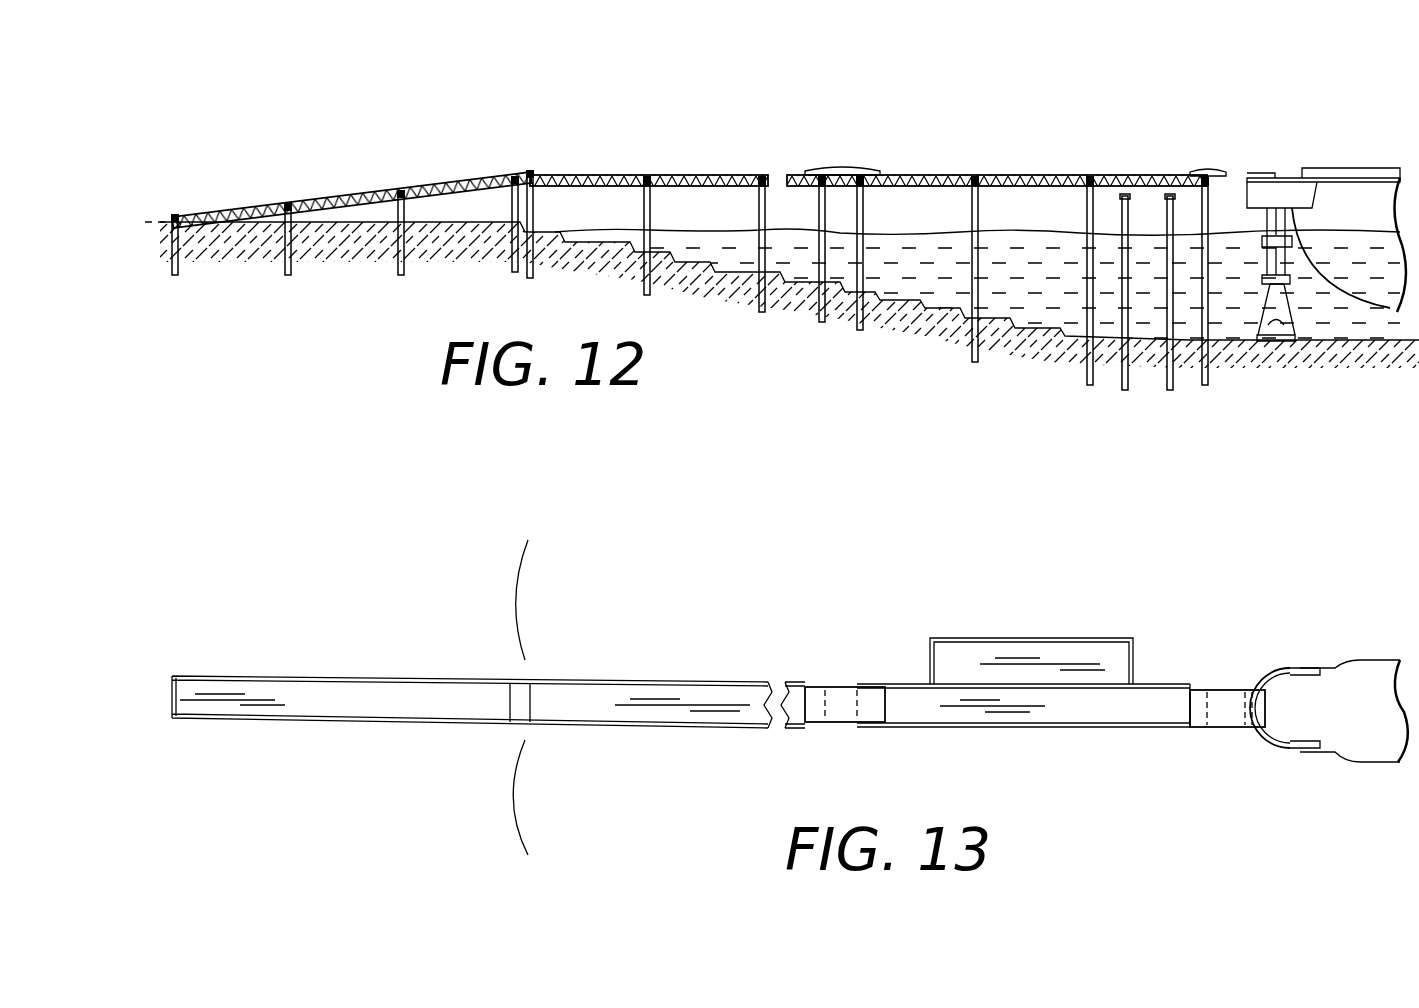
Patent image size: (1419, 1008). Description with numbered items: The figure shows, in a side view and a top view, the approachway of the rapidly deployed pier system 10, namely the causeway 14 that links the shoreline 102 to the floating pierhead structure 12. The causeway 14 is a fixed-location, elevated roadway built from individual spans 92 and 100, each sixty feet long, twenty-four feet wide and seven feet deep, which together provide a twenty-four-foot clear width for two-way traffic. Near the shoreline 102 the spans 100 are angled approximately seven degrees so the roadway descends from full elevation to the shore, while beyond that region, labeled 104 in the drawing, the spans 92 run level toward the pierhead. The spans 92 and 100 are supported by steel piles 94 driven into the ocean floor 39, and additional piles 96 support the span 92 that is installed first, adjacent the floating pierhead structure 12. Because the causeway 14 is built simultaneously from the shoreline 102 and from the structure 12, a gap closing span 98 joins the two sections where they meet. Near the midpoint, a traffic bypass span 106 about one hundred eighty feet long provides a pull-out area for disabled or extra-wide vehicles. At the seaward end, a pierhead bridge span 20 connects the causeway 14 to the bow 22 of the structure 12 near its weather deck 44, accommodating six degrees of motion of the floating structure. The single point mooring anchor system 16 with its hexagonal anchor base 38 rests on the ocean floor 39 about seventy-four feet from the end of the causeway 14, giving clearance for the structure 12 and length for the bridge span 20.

In FIG. 12, the rapidly deployed pier system 10 is at (366, 78).
In FIG. 13, the rapidly deployed pier system 10 is at (476, 508).
In FIG. 12, the floating pierhead structure 12 is at (1338, 142).
In FIG. 13, the floating pierhead structure 12 is at (1338, 615).
In FIG. 12, the causeway 14 is at (692, 138).
In FIG. 13, the causeway 14 is at (690, 645).
In FIG. 12, the single point mooring anchor system 16 is at (1252, 290).
In FIG. 12, the bridge span 20 is at (1218, 175).
In FIG. 13, the bridge span 20 is at (1218, 700).
In FIG. 12, the bow 22 is at (1276, 178).
In FIG. 13, the bow 22 is at (1286, 718).
In FIG. 12, the anchor base 38 is at (1284, 335).
In FIG. 12, the ocean floor 39 is at (1347, 337).
In FIG. 12, the weather deck 44 is at (1387, 168).
In FIG. 13, the weather deck 44 is at (1368, 720).
In FIG. 12, the span 92 is at (585, 175).
In FIG. 13, the span 92 is at (620, 710).
In FIG. 12, the steel piles 94 is at (1088, 214).
In FIG. 12, the piles 96 is at (1136, 200).
In FIG. 12, the gap closing span 98 is at (838, 168).
In FIG. 13, the gap closing span 98 is at (838, 692).
In FIG. 12, the span 100 is at (480, 175).
In FIG. 13, the span 100 is at (354, 693).
In FIG. 12, the shoreline 102 is at (375, 222).
In FIG. 13, the shoreline 102 is at (470, 608).
In FIG. 12, the horizontal section 104 is at (778, 233).
In FIG. 13, the horizontal section 104 is at (605, 608).
In FIG. 13, the traffic bypass span 106 is at (960, 655).